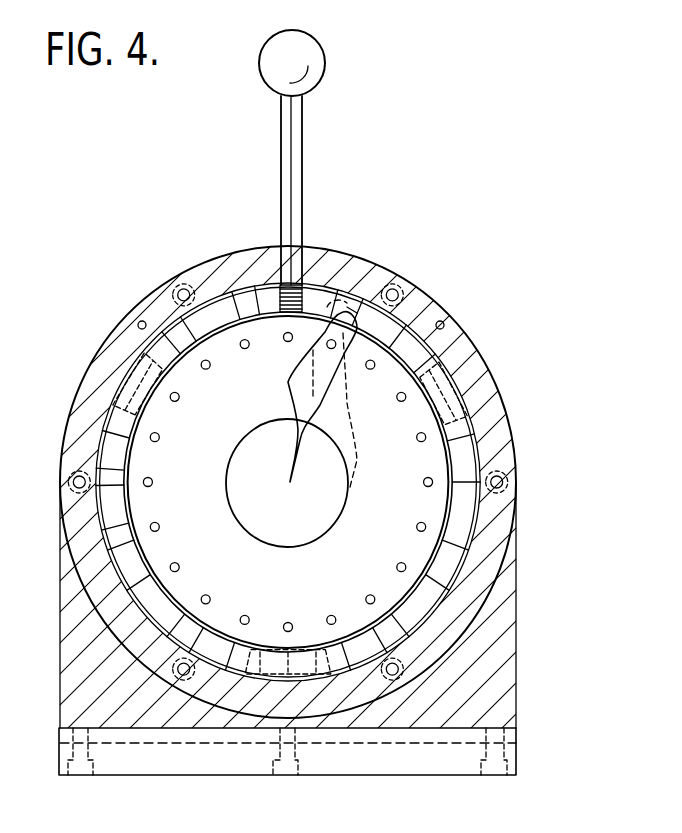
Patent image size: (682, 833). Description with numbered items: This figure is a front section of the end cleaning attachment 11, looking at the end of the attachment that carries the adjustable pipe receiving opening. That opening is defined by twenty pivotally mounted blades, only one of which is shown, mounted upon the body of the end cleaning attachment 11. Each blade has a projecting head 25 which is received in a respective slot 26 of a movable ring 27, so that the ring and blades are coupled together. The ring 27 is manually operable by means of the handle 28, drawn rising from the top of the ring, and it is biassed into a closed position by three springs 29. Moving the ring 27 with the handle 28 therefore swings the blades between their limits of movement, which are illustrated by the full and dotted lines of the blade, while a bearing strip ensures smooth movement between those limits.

The end cleaning attachment 11 is at (466, 297).
The projecting head 25 is at (352, 310).
The slot 26 is at (401, 340).
The movable ring 27 is at (469, 453).
The handle 28 is at (296, 122).
The spring 29 is at (123, 388).